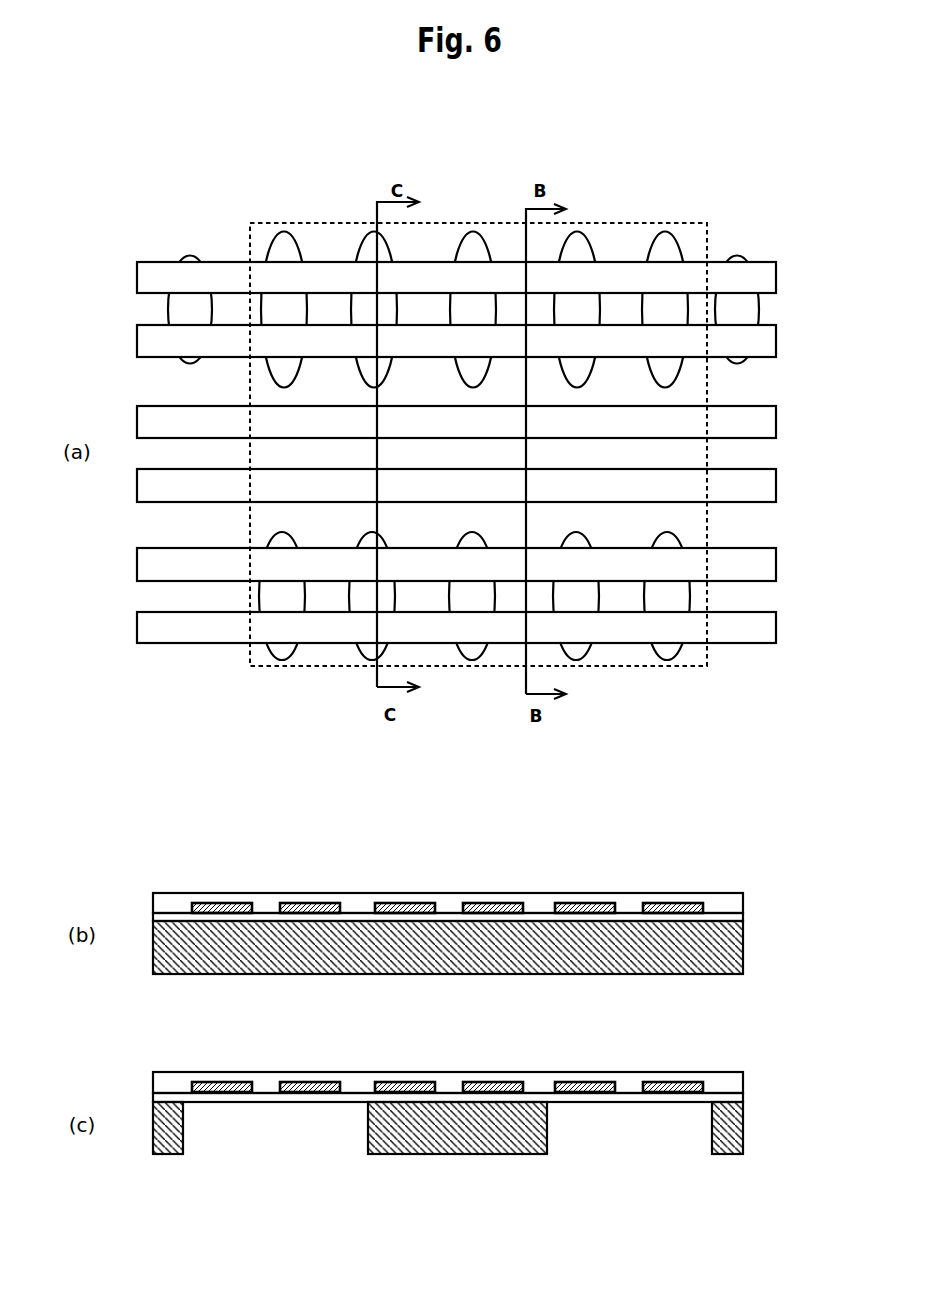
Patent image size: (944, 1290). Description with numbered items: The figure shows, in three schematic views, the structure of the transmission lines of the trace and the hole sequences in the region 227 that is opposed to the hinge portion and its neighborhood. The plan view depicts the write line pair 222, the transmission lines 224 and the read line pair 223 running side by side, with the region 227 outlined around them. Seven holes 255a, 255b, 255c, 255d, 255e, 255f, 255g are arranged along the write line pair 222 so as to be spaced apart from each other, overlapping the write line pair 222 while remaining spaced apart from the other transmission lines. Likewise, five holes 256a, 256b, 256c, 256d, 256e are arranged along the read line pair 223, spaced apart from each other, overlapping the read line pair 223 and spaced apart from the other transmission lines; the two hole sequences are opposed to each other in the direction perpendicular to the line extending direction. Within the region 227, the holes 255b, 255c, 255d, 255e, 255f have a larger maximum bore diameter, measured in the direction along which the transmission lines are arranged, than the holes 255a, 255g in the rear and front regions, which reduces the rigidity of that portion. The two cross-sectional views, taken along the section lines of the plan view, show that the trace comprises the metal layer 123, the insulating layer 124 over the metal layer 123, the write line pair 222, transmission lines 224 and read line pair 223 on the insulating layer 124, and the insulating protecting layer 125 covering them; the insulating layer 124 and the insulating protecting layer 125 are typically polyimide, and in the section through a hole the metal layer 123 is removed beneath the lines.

The hole 255a is at (186, 256).
The hole 255b is at (286, 232).
The hole 255c is at (384, 246).
The hole 255d is at (476, 232).
The hole 255e is at (580, 232).
The hole 255f is at (668, 232).
The hole 255g is at (740, 256).
The hole 256a is at (282, 661).
The hole 256b is at (372, 661).
The hole 256c is at (472, 661).
The hole 256d is at (576, 661).
The hole 256e is at (667, 661).
The write line pair 222 is at (776, 275).
The transmission lines 224 is at (776, 418).
The read line pair 223 is at (776, 558).
The region opposed to the hinge portion 227 is at (706, 658).
The insulating protecting layer 125 is at (768, 1050).
The insulating layer 124 is at (771, 1078).
The metal layer 123 is at (771, 1118).